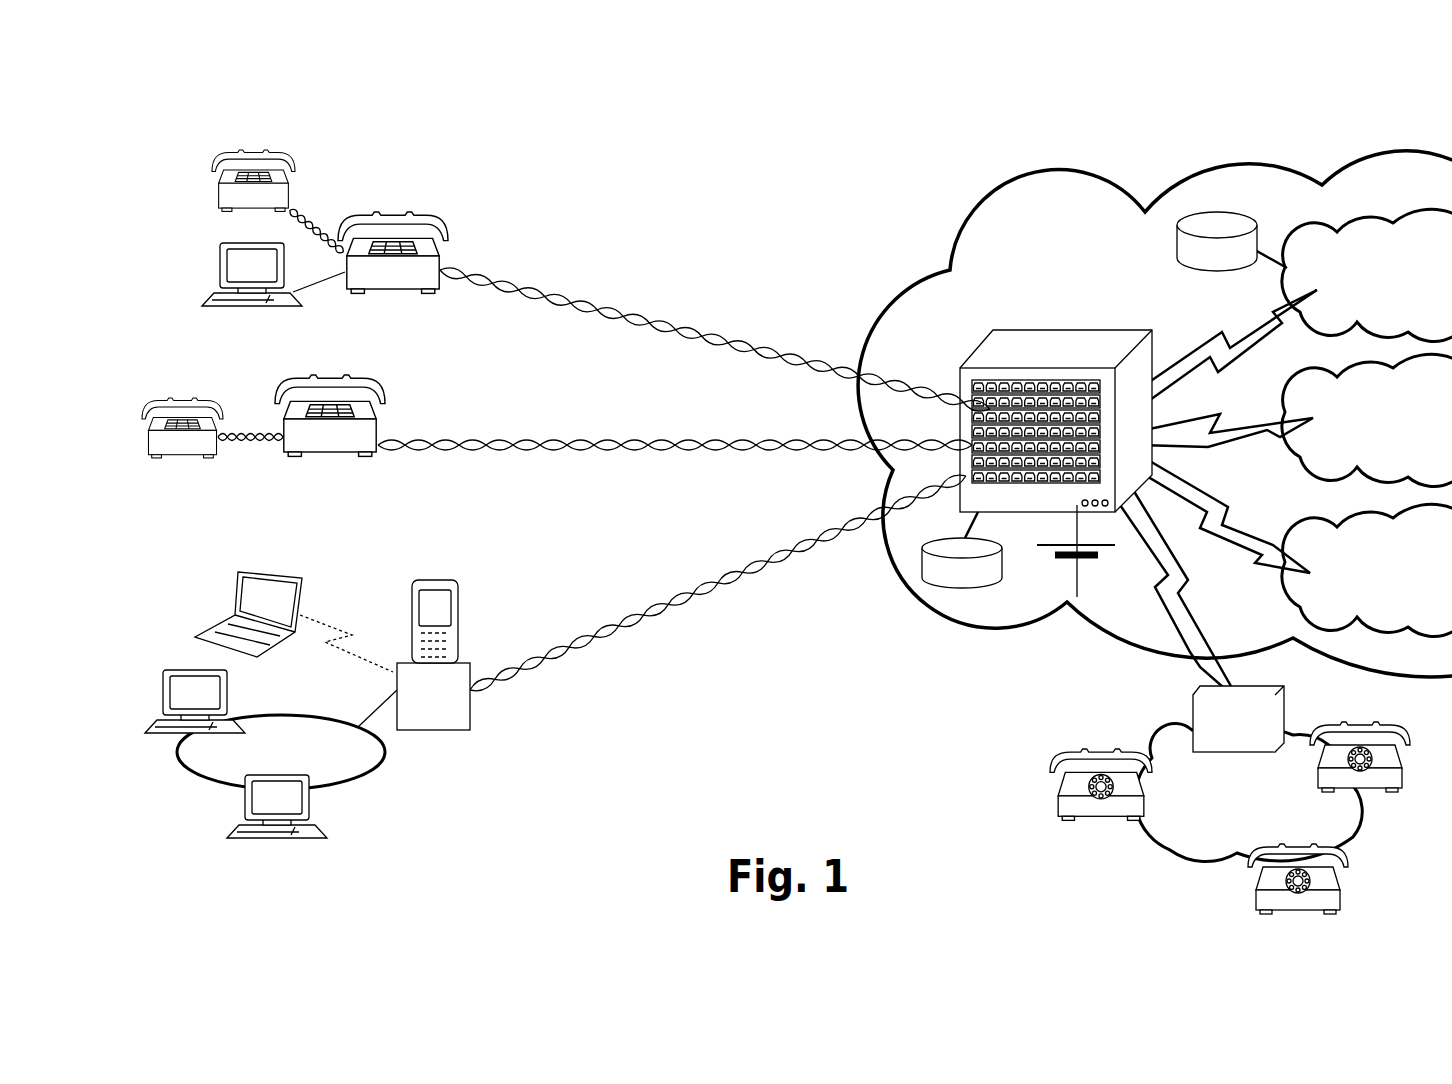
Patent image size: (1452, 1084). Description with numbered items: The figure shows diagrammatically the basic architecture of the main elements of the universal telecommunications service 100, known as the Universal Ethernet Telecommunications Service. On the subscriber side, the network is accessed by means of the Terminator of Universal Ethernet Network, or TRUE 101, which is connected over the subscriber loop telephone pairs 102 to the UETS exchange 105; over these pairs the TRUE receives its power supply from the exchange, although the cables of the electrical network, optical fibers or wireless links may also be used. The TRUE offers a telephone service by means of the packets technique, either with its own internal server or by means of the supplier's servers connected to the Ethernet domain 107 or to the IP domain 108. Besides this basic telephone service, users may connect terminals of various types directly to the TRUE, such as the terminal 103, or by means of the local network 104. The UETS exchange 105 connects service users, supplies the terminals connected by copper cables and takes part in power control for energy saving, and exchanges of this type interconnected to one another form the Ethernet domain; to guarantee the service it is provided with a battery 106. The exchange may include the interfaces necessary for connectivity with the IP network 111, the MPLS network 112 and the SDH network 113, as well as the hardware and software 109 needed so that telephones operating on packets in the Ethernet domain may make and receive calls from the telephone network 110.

The universal telecommunications service 100 is at (1155, 414).
The Terminator of Universal Ethernet Network (TRUE) 101 is at (391, 183).
The subscriber loop telephone pairs 102 is at (660, 578).
The terminal connected directly to the TRUE 103 is at (429, 775).
The local network 104 is at (352, 600).
The UETS exchange 105 is at (950, 334).
The battery 106 is at (1045, 589).
The Ethernet domain servers 107 is at (915, 605).
The IP domain servers 108 is at (1242, 187).
The hardware and software for telephone network connectivity 109 is at (1165, 705).
The telephone network 110 is at (1230, 818).
The IP network 111 is at (1367, 275).
The MPLS network 112 is at (1367, 420).
The SDH network 113 is at (1367, 570).